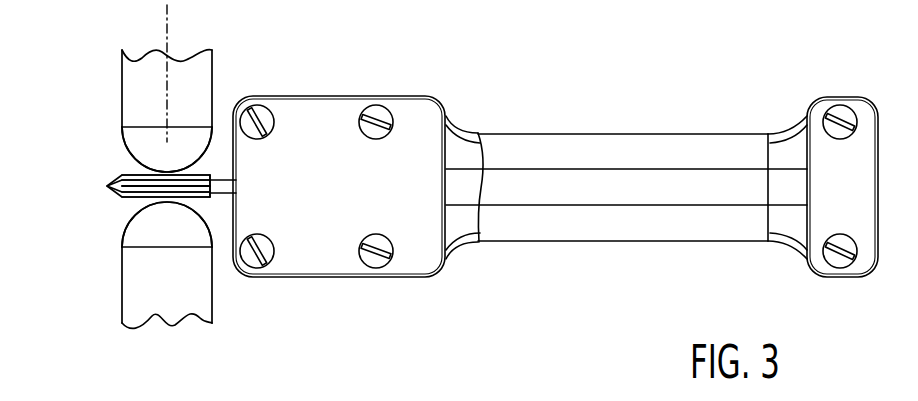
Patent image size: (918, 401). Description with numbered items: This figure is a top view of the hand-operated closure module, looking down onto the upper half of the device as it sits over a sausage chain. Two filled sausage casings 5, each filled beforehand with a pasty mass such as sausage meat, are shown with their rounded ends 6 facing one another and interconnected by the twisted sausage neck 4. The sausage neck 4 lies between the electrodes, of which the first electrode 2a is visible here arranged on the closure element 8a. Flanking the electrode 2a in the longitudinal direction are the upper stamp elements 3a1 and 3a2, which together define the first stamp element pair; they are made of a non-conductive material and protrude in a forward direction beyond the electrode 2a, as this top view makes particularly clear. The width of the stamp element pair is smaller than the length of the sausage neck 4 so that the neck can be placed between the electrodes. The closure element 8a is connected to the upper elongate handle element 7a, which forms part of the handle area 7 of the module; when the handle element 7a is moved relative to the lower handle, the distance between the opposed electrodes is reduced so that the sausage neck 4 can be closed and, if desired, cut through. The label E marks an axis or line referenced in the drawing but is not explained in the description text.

The axis E is at (167, 71).
The tongue 2a is at (110, 181).
The lower jaw 3a1 is at (118, 192).
The upper jaw 3a2 is at (121, 167).
The clamping piece 4 is at (218, 165).
The roller 5 is at (192, 70).
The roller end face 6 is at (122, 142).
The lever 7 is at (651, 117).
The lever arm 7a is at (532, 140).
The mounting plate 8a is at (315, 115).